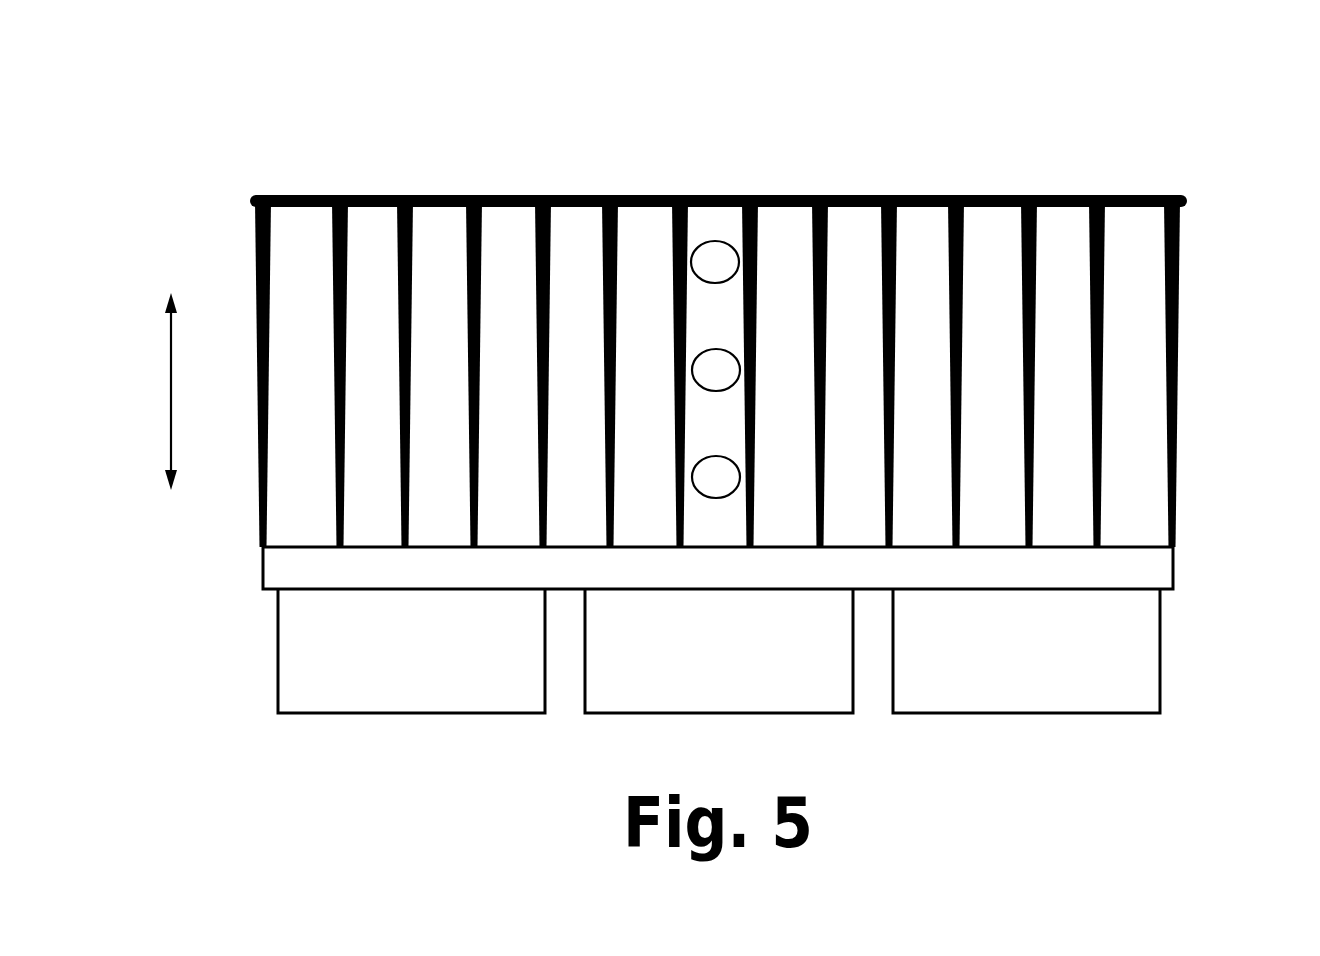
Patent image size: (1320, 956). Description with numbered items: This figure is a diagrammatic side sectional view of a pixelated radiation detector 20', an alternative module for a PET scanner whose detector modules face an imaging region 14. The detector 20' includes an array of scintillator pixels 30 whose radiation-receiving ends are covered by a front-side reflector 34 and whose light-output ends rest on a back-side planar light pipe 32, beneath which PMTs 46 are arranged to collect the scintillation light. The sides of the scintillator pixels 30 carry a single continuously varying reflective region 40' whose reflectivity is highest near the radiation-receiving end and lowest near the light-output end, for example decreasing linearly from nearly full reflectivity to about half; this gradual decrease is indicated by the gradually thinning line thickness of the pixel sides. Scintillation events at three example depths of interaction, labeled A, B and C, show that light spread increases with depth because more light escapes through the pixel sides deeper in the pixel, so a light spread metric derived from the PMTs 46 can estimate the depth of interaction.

The imaging region 14 is at (713, 63).
The pixelated radiation detector 20' is at (706, 409).
The scintillator pixels 30 is at (437, 250).
The back-side planar light pipe 32 is at (1162, 568).
The front-side reflector 34 is at (505, 197).
The continuously varying reflective region 40' is at (867, 334).
The PMTs 46 is at (515, 695).